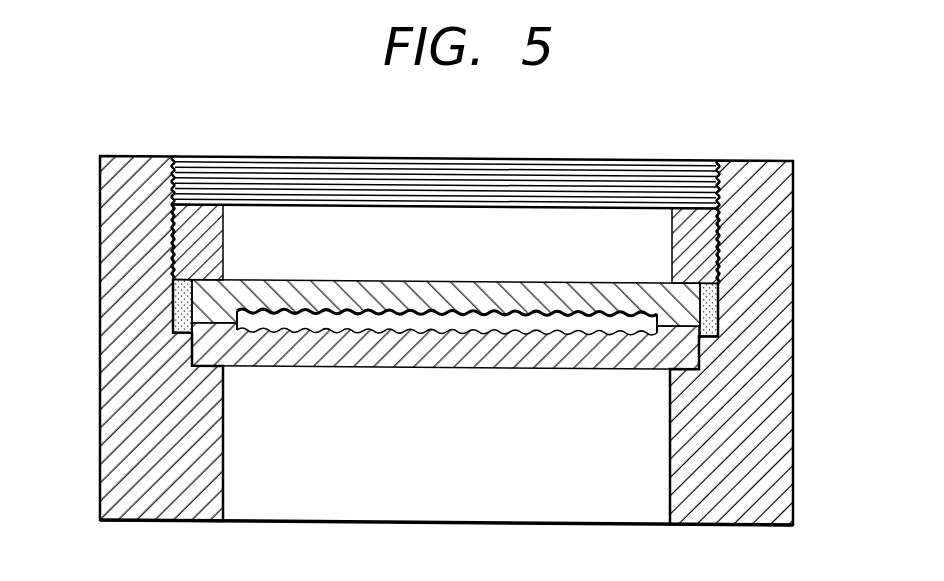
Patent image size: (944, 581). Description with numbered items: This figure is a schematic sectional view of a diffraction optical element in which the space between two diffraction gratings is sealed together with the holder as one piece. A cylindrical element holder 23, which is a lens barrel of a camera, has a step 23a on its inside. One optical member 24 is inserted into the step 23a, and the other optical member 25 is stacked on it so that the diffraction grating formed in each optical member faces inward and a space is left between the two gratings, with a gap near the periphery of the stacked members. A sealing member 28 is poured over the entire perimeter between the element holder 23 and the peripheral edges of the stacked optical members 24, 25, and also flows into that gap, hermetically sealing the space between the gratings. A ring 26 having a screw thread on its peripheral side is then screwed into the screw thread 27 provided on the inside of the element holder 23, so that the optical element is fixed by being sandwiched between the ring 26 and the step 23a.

The cylindrical element holder 23 is at (780, 463).
The step 23a is at (662, 374).
The optical member 24 is at (687, 346).
The optical member 25 is at (688, 308).
The ring 26 is at (680, 172).
The screw thread 27 is at (205, 221).
The sealing member 28 is at (180, 310).